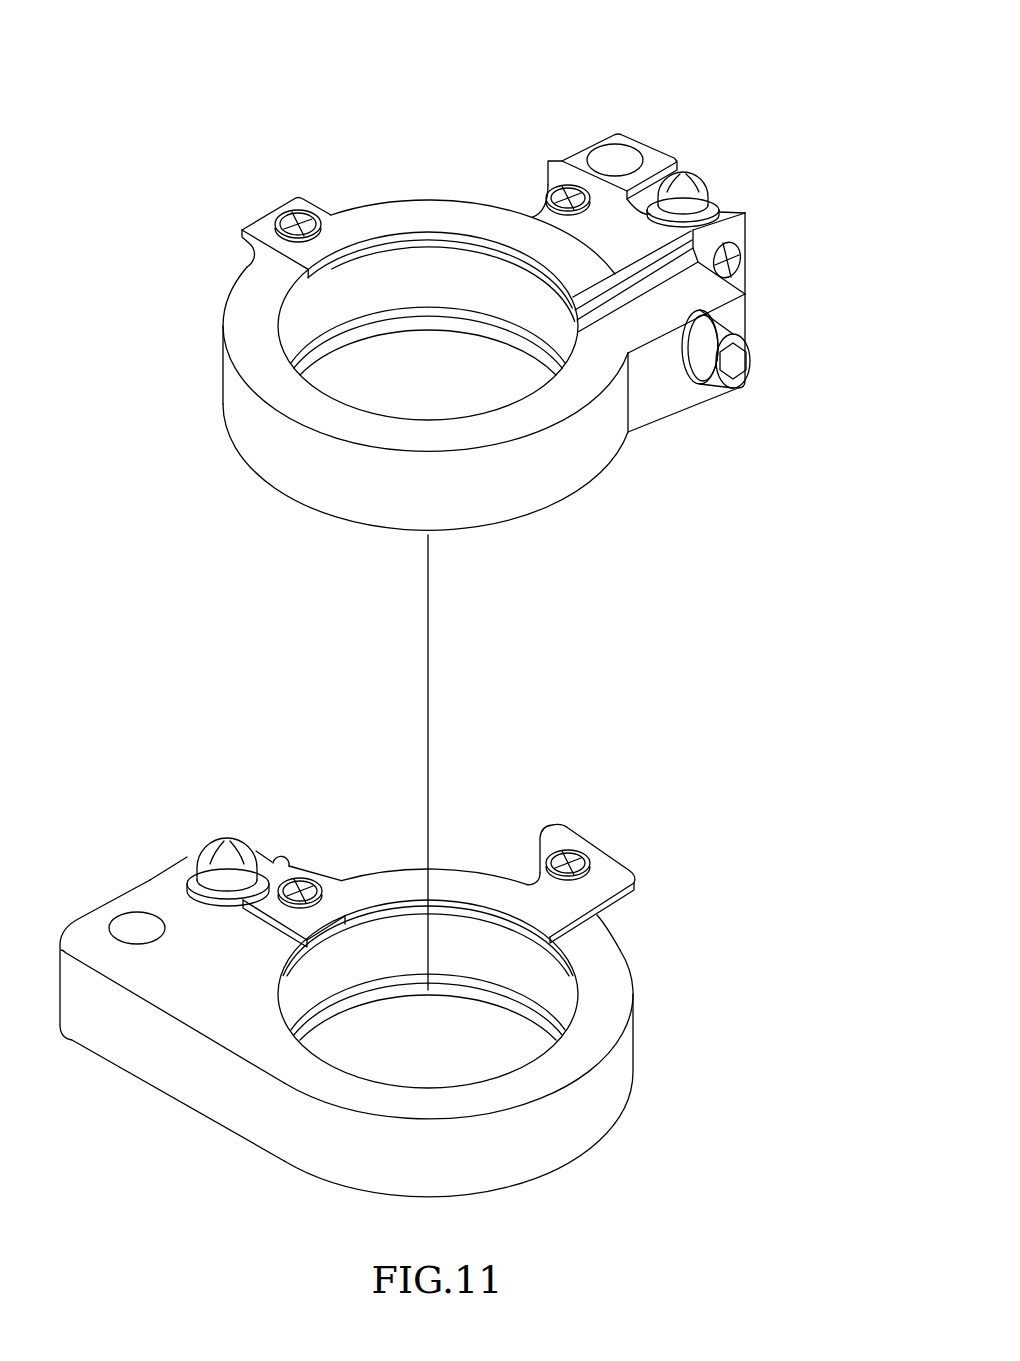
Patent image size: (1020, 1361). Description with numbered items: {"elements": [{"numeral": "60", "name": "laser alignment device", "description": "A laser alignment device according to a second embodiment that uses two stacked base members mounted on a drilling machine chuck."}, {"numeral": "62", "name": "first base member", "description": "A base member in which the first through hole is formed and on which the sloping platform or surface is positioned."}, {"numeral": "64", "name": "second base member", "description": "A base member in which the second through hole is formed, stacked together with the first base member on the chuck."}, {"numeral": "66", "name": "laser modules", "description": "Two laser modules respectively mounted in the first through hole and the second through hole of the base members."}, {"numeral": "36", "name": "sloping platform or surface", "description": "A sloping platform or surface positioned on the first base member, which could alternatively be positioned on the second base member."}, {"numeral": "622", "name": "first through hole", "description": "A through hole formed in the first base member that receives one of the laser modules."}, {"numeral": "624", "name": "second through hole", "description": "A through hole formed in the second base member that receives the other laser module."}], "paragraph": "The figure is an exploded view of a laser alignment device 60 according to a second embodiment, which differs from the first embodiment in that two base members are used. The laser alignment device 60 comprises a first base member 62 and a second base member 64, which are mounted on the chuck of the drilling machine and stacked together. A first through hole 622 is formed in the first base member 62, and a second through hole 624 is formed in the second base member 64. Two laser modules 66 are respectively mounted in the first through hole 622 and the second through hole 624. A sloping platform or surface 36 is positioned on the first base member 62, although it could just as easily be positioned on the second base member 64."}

The clamp assembly 60 is at (709, 103).
The upper clamp half 62 is at (567, 480).
The lower clamp half 64 is at (620, 1005).
The positioning pin 66 is at (702, 183).
The flange plate 36 is at (731, 207).
The fastening block 622 is at (746, 215).
The positioning pad 624 is at (185, 868).